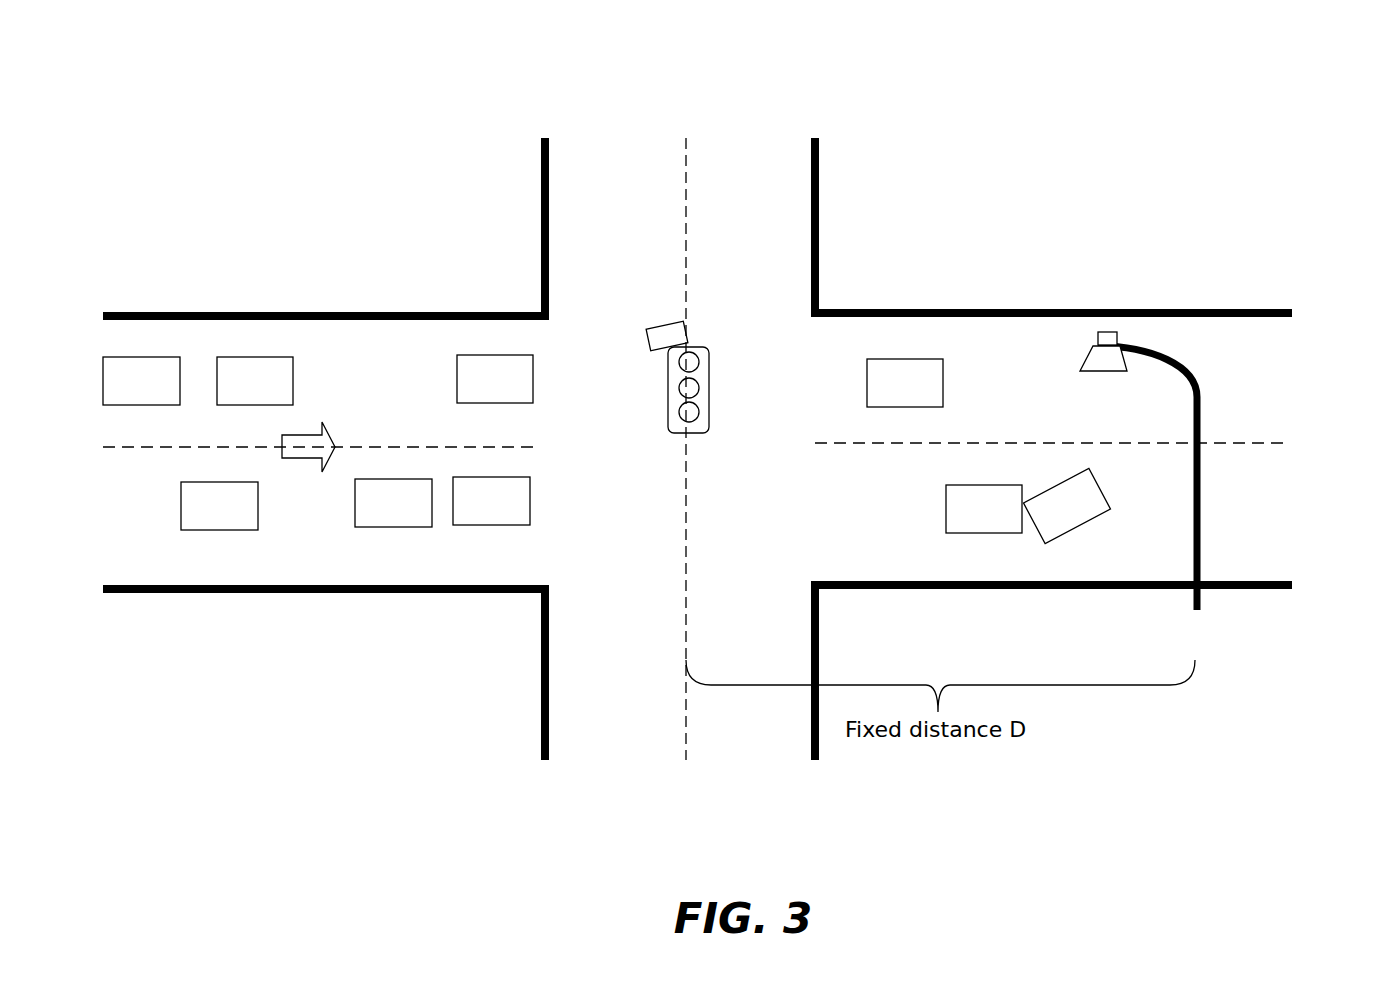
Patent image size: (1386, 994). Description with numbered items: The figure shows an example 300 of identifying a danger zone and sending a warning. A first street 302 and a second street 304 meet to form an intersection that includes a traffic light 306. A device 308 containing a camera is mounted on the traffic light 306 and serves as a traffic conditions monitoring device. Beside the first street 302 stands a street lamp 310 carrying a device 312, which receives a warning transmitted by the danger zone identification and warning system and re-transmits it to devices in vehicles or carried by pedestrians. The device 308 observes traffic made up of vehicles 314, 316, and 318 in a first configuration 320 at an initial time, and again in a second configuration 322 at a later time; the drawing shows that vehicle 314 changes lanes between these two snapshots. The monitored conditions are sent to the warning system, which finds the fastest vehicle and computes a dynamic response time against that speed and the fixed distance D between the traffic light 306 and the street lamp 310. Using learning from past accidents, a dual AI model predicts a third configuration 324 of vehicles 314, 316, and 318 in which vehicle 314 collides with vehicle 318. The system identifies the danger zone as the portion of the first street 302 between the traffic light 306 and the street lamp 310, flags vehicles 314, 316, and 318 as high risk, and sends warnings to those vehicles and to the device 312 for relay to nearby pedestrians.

The example 300 is at (755, 56).
The first street 302 is at (1300, 313).
The second street 304 is at (815, 777).
The traffic light 306 is at (718, 347).
The device 308 is at (684, 324).
The street lamp 310 is at (1203, 342).
The device 312 is at (1118, 338).
The vehicle 314 is at (124, 392).
The vehicle 316 is at (238, 392).
The vehicle 318 is at (645, 505).
The first configuration 320 is at (292, 615).
The second configuration 322 is at (350, 615).
The third configuration 324 is at (1117, 593).